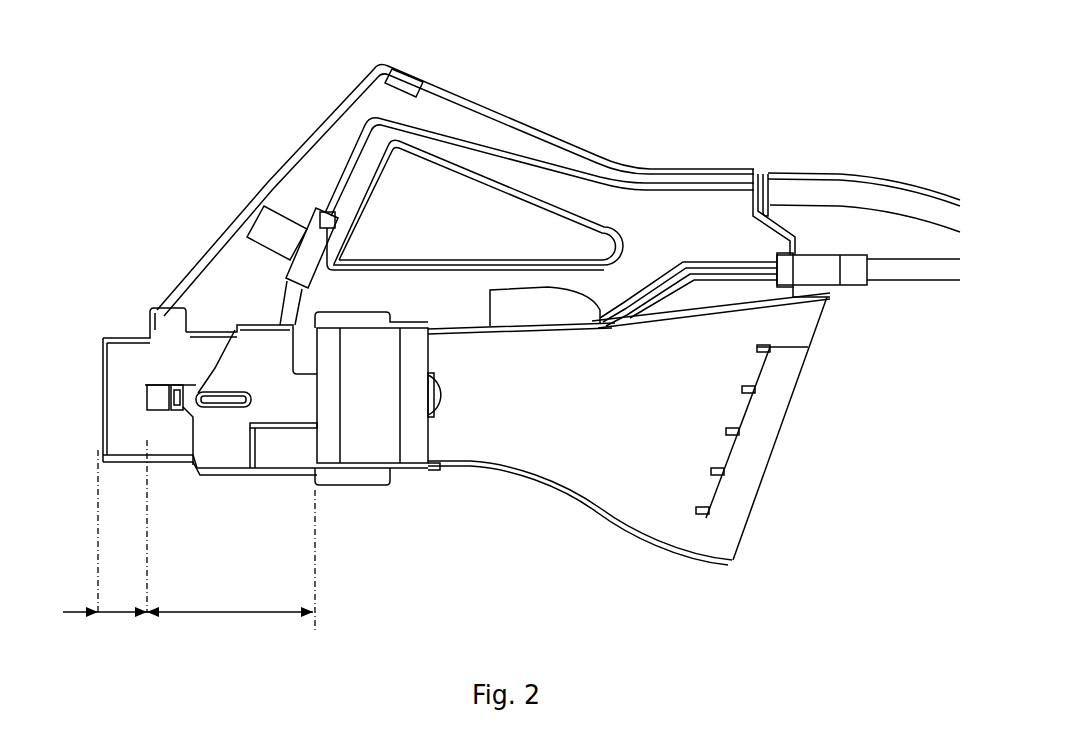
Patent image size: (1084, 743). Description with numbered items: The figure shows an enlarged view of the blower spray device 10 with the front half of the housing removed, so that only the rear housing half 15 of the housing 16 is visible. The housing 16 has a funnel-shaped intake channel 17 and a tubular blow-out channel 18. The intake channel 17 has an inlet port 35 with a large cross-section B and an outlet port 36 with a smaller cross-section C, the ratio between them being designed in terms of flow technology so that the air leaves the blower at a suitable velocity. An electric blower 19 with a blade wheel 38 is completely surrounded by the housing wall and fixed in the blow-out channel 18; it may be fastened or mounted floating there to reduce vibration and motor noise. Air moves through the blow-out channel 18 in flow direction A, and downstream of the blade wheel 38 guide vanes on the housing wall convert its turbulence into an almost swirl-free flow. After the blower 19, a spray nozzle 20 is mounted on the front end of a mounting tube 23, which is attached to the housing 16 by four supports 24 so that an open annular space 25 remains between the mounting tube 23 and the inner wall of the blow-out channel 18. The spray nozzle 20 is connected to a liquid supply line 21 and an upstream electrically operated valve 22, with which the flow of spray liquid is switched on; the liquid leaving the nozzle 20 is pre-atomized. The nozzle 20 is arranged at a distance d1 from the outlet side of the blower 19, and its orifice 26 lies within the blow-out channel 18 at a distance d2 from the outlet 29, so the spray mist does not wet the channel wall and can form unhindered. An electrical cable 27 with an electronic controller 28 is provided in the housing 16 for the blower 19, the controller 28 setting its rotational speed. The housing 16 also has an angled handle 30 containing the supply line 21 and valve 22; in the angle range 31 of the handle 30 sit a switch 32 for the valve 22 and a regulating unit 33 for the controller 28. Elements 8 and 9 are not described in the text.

The pipe 8 is at (857, 193).
The bracket 9 is at (762, 180).
The blower spray device 10 is at (417, 506).
The rear housing half 15 is at (433, 470).
The housing 16 is at (536, 509).
The funnel-shaped intake channel 17 is at (608, 488).
The tubular blow-out channel 18 is at (242, 468).
The electric blower 19 is at (370, 443).
The spray nozzle 20 is at (170, 412).
The liquid supply line 21 is at (560, 167).
The electrically operated valve 22 is at (277, 227).
The mounting tube 23 is at (200, 392).
The supports 24 is at (219, 394).
The open annular space 25 is at (210, 356).
The orifice 26 is at (144, 406).
The electrical cable 27 is at (662, 287).
The electronic controller 28 is at (540, 303).
The outlet 29 is at (103, 383).
The angled handle 30 is at (533, 130).
The angle range 31 is at (370, 75).
The switch 32 is at (463, 97).
The regulating unit 33 is at (408, 76).
The inlet port 35 is at (697, 490).
The outlet port 36 is at (433, 424).
The blade wheel 38 is at (477, 417).
The flow direction A is at (820, 403).
The large cross-section B is at (713, 433).
The small cross-section C is at (498, 398).
The distance d1 is at (203, 613).
The distance d2 is at (125, 613).